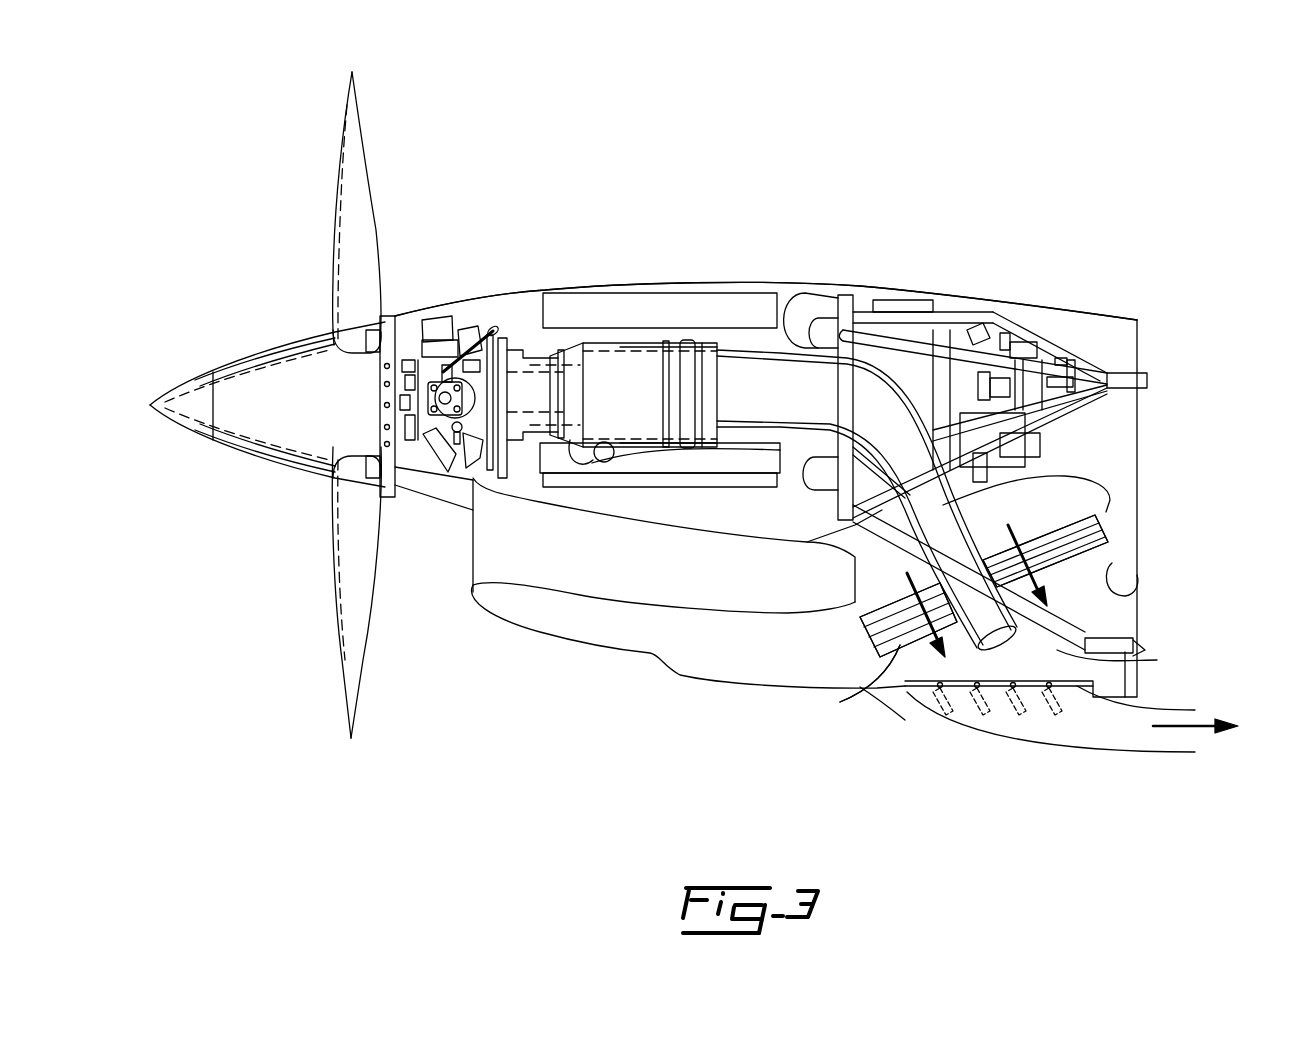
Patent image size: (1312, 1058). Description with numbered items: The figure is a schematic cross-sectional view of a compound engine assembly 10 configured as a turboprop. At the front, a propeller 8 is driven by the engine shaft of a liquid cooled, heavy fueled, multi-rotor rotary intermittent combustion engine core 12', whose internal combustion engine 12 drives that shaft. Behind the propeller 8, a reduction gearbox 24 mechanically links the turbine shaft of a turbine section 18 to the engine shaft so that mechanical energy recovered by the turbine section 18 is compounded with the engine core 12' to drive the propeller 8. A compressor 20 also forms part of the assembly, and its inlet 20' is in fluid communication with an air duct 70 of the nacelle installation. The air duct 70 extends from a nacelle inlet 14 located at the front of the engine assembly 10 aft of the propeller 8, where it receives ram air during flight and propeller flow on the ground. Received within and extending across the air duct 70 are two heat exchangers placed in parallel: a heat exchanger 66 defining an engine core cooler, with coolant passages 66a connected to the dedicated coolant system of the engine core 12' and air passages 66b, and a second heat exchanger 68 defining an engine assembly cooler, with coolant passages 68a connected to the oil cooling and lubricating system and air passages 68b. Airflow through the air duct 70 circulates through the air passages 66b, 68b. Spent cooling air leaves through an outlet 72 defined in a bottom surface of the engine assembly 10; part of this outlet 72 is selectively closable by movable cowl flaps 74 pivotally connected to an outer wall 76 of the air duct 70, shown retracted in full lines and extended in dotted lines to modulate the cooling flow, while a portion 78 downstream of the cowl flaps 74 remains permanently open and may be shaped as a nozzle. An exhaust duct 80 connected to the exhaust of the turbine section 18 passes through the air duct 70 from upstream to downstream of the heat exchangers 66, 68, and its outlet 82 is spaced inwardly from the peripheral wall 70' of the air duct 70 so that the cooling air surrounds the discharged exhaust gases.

The propeller 8 is at (355, 178).
The compound engine assembly 10 is at (1063, 194).
The internal combustion engine 12 is at (766, 444).
The engine core 12' is at (766, 256).
The nacelle inlet 14 is at (470, 557).
The turbine section 18 is at (603, 372).
The compressor 20 is at (972, 351).
The compressor inlet 20' is at (1085, 425).
The reduction gearbox 24 is at (447, 375).
The heat exchanger 66 is at (1090, 533).
The second heat exchanger 68 is at (1115, 536).
The coolant passages 66a is at (873, 660).
The coolant passages 68a is at (837, 695).
The air passages 66b is at (895, 658).
The air passages 68b is at (901, 755).
The air duct 70 is at (882, 671).
The peripheral wall 70' is at (1143, 612).
The outlet 72 is at (968, 690).
The cowl flaps 74 is at (1030, 690).
The outer wall 76 is at (870, 690).
The permanently open portion 78 is at (1070, 690).
The exhaust duct 80 is at (1040, 477).
The exhaust duct outlet 82 is at (1125, 623).